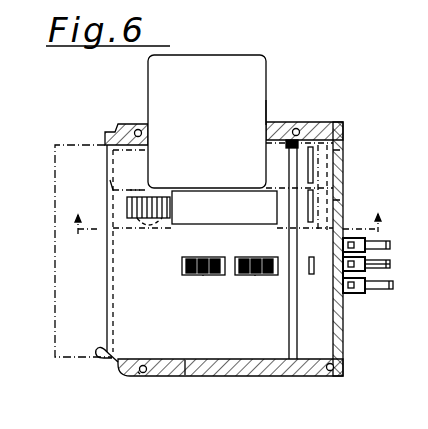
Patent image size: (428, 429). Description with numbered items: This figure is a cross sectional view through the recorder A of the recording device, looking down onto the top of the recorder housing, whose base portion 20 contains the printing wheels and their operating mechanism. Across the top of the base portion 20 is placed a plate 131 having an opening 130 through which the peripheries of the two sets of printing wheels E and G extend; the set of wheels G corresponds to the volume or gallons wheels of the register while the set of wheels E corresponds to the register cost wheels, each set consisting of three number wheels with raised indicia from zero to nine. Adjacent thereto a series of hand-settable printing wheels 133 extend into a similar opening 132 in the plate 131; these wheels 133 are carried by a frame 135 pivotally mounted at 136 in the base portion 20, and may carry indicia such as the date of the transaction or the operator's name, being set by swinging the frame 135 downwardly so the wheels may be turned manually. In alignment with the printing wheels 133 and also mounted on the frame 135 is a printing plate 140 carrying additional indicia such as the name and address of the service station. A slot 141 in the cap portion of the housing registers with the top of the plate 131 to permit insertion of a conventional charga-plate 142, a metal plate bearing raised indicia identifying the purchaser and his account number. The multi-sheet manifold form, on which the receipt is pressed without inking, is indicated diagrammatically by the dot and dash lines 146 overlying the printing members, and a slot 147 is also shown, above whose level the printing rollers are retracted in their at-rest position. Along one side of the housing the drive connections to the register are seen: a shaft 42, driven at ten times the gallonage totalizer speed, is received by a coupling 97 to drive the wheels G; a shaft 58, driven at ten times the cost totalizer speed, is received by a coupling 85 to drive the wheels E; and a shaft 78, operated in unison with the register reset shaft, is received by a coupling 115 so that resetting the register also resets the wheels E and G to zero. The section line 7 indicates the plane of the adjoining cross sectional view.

The pivot 136 is at (344, 160).
The charga-plate 142 is at (268, 70).
The slot 141 is at (268, 118).
The printing plate 140 is at (243, 224).
The opening 132 is at (130, 220).
The printing wheels 133 is at (136, 192).
The frame 135 is at (112, 188).
The opening 130 is at (238, 257).
The printing wheels G is at (203, 276).
The printing wheels E is at (255, 276).
The manifold form 146 is at (56, 324).
The slot 147 is at (96, 360).
The plate 131 is at (130, 349).
The recorder A is at (137, 381).
The base portion 20 is at (188, 373).
The section line 7- 7 is at (227, 216).
The coupling 97 is at (350, 244).
The shaft 42 is at (382, 240).
The coupling 115 is at (391, 246).
The shaft 78 is at (391, 264).
The shaft 58 is at (394, 286).
The coupling 85 is at (367, 294).